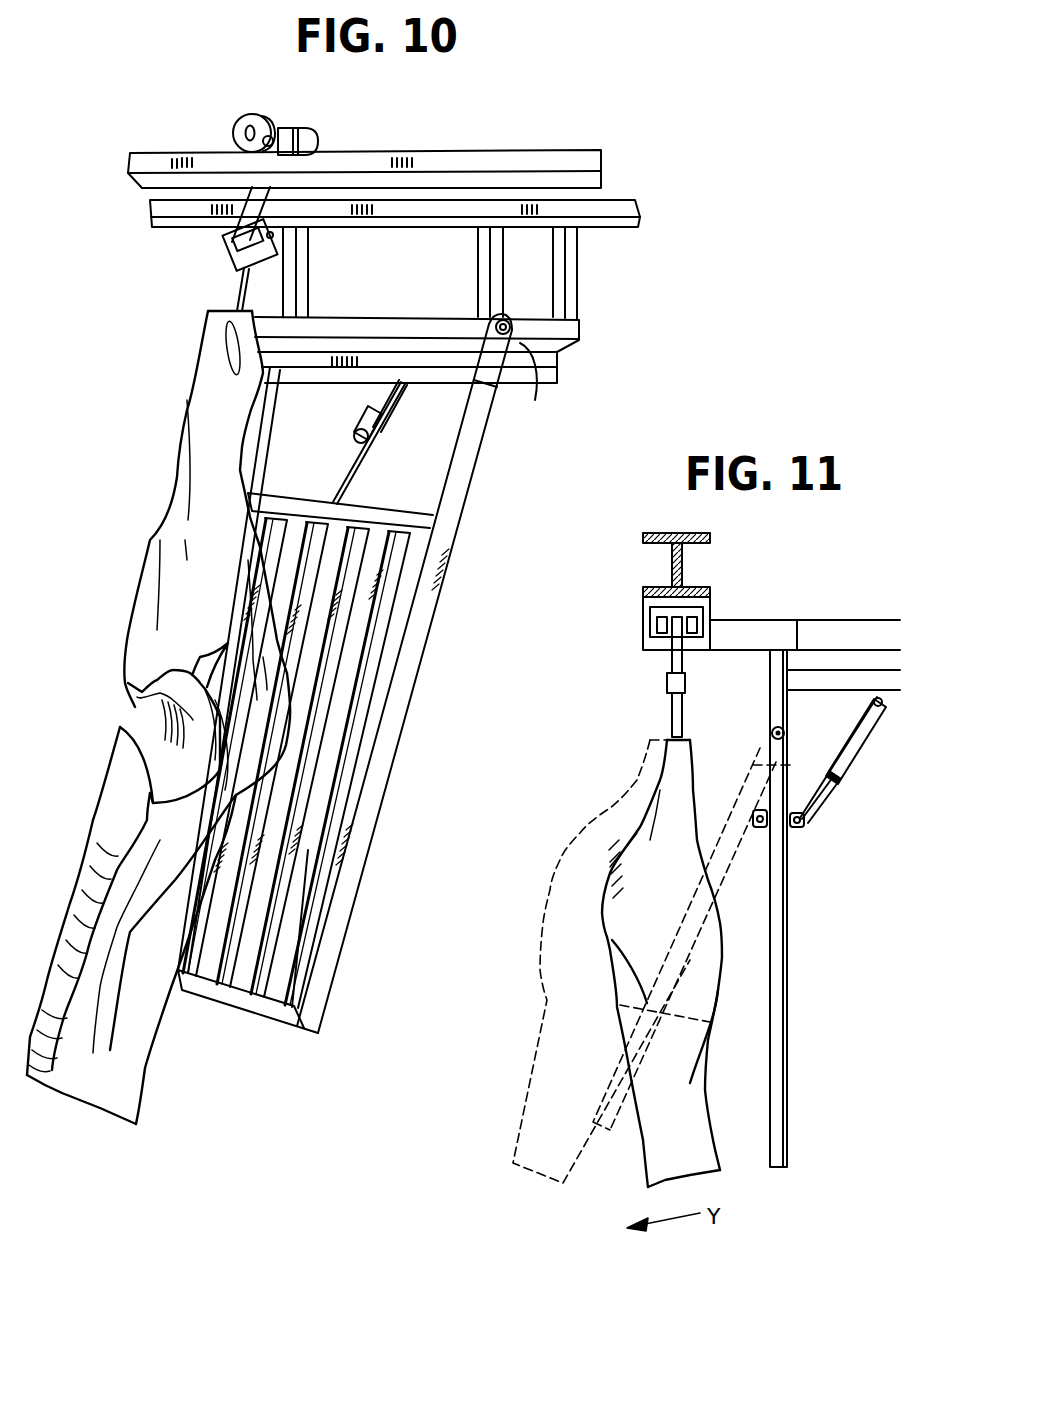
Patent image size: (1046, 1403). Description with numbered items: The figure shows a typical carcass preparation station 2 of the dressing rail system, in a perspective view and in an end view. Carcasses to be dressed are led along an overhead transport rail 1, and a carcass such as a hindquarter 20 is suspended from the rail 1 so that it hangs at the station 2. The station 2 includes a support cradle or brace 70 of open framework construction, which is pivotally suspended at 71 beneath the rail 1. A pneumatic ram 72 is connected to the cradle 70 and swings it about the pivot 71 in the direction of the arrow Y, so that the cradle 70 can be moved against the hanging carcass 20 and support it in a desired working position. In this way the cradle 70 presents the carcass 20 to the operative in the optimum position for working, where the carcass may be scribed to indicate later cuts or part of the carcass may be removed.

In FIG. 10, the transport rail 1 is at (603, 178).
In FIG. 10, the first carcass dressing station 2 is at (563, 145).
In FIG. 10, the hindquarter 20 is at (166, 506).
In FIG. 11, the hindquarter 20 is at (640, 827).
In FIG. 10, the support cradle 70 is at (411, 650).
In FIG. 11, the support cradle 70 is at (790, 1002).
In FIG. 10, the pivot 71 is at (513, 335).
In FIG. 11, the pivot 71 is at (770, 732).
In FIG. 10, the pneumatic ram 72 is at (397, 403).
In FIG. 11, the pneumatic ram 72 is at (847, 770).